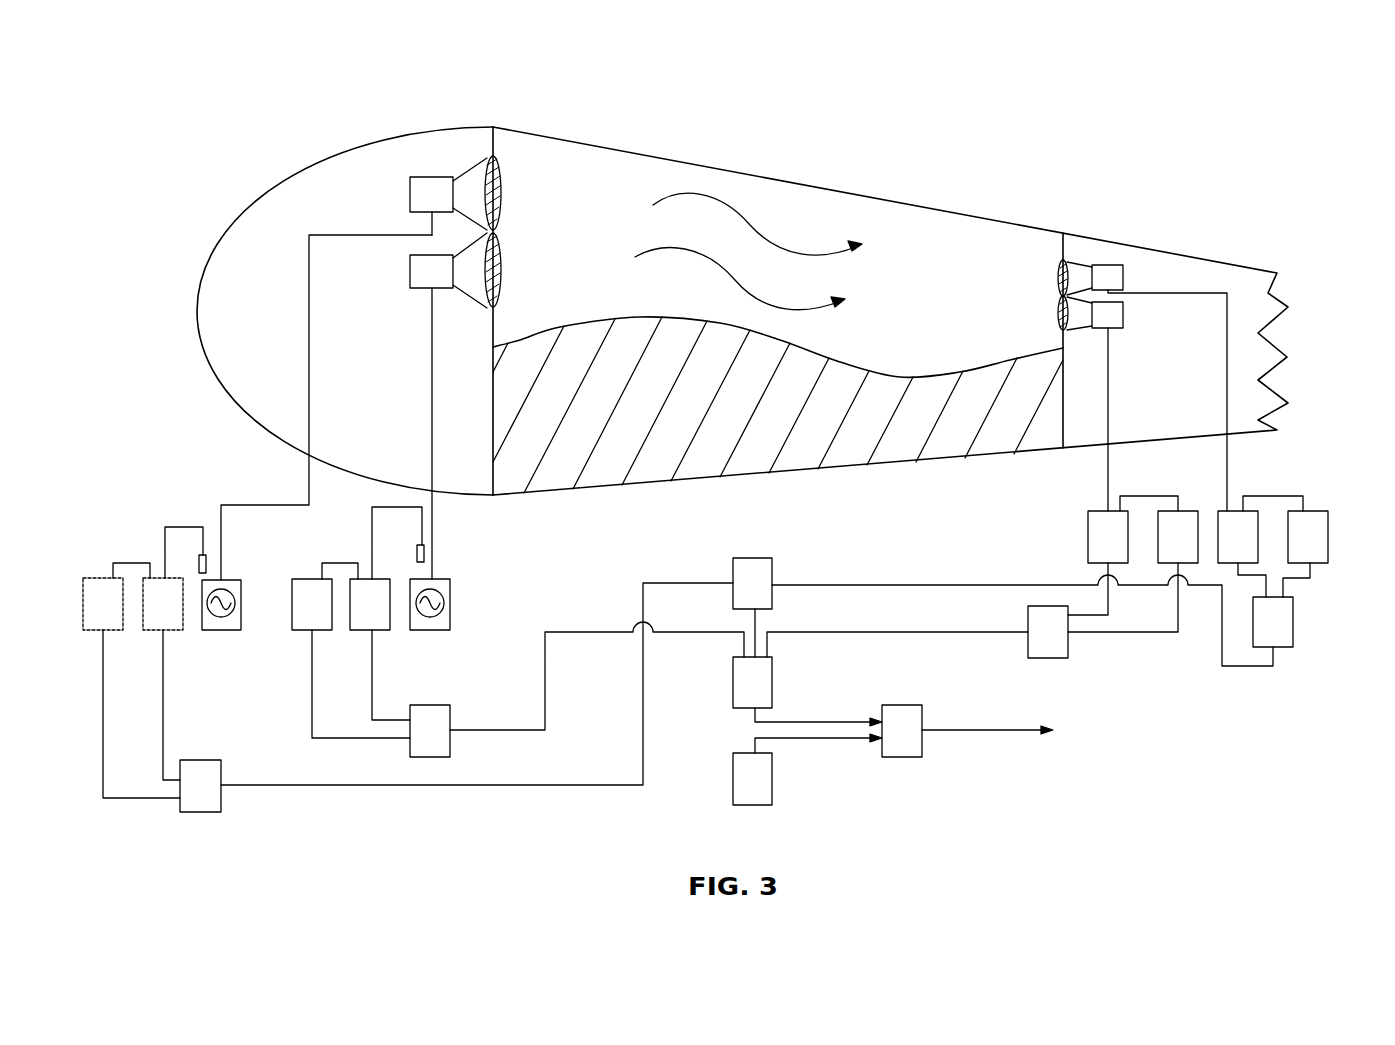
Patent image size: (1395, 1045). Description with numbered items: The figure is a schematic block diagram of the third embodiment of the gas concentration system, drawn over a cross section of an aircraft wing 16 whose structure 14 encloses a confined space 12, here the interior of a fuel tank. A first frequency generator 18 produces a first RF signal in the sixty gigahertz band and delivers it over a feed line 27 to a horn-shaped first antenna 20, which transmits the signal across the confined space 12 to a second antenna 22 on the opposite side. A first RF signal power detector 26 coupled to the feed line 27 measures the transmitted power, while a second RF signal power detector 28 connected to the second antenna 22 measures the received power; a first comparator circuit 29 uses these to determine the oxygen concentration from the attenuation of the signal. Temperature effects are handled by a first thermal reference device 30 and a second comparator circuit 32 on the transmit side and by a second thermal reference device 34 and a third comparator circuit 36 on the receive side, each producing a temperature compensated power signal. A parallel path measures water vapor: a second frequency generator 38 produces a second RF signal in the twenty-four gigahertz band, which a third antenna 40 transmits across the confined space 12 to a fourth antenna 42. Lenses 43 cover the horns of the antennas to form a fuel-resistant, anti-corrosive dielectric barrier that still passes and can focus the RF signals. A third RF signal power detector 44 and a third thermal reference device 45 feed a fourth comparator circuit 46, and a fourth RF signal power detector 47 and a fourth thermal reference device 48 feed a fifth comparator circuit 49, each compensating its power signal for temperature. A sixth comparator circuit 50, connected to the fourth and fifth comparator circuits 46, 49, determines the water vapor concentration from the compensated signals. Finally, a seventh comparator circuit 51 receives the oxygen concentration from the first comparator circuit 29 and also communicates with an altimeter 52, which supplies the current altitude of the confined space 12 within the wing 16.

The confined space 12 is at (948, 243).
The structure 14 is at (865, 185).
The aircraft wing 16 is at (417, 130).
The first frequency generator 18 is at (451, 604).
The first antenna 20 is at (478, 300).
The second antenna 22 is at (1074, 330).
The first RF signal power detector 26 is at (376, 632).
The feed line 27 is at (433, 390).
The second RF signal power detector 28 is at (1088, 535).
The first comparator circuit 29 is at (772, 695).
The first thermal reference device 30 is at (308, 632).
The second comparator circuit 32 is at (430, 705).
The second thermal reference device 34 is at (1190, 510).
The third comparator circuit 36 is at (1047, 660).
The second frequency generator 38 is at (232, 578).
The third antenna 40 is at (477, 163).
The fourth antenna 42 is at (1078, 262).
The lenses 43 is at (503, 187).
The third RF signal power detector 44 is at (168, 632).
The third thermal reference device 45 is at (105, 578).
The fourth comparator circuit 46 is at (200, 813).
The fourth RF signal power detector 47 is at (1242, 510).
The fourth thermal reference device 48 is at (1320, 510).
The fifth comparator circuit 49 is at (1293, 630).
The sixth comparator circuit 50 is at (755, 558).
The seventh comparator circuit 51 is at (907, 758).
The altimeter 52 is at (772, 795).